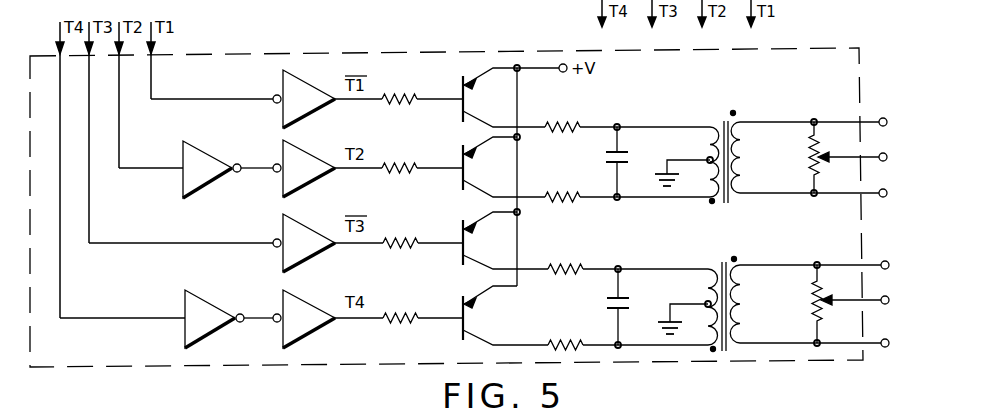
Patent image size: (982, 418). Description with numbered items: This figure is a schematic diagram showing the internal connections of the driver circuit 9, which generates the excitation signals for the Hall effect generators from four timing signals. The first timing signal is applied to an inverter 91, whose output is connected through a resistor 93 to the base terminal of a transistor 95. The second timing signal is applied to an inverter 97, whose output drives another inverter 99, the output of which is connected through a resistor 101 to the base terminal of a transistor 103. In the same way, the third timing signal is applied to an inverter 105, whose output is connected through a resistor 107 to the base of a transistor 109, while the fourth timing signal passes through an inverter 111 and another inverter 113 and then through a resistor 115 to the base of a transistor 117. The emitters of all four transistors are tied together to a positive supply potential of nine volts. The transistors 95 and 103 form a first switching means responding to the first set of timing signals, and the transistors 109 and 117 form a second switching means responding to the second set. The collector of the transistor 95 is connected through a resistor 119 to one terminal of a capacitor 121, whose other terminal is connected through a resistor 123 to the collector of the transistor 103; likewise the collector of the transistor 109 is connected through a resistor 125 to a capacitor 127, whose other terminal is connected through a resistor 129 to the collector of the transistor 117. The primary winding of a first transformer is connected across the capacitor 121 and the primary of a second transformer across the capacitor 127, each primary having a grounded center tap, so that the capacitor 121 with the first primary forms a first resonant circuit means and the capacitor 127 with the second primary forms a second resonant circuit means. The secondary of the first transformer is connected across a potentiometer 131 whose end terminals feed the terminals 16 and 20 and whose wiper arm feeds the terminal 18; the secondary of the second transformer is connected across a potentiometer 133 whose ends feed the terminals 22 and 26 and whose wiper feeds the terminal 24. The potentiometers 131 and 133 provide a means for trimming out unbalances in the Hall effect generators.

The driver circuit 9 is at (861, 73).
The terminal 16 is at (887, 120).
The terminal 18 is at (887, 155).
The terminal 20 is at (887, 193).
The terminal 22 is at (889, 263).
The terminal 24 is at (889, 298).
The terminal 26 is at (889, 341).
The inverter 91 is at (293, 86).
The resistor 93 is at (398, 93).
The transistor 95 is at (452, 107).
The inverter 97 is at (196, 153).
The inverter 99 is at (293, 155).
The resistor 101 is at (398, 162).
The transistor 103 is at (452, 179).
The inverter 105 is at (293, 228).
The resistor 107 is at (397, 238).
The transistor 109 is at (452, 251).
The inverter 111 is at (197, 305).
The inverter 113 is at (297, 307).
The resistor 115 is at (398, 314).
The transistor 117 is at (455, 328).
The resistor 119 is at (565, 122).
The capacitor 121 is at (630, 160).
The resistor 123 is at (573, 192).
The resistor 125 is at (580, 266).
The capacitor 127 is at (655, 296).
The resistor 129 is at (580, 342).
The potentiometer 131 is at (808, 158).
The potentiometer 133 is at (812, 300).